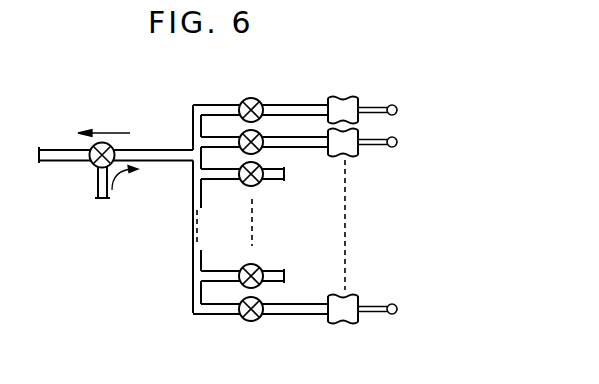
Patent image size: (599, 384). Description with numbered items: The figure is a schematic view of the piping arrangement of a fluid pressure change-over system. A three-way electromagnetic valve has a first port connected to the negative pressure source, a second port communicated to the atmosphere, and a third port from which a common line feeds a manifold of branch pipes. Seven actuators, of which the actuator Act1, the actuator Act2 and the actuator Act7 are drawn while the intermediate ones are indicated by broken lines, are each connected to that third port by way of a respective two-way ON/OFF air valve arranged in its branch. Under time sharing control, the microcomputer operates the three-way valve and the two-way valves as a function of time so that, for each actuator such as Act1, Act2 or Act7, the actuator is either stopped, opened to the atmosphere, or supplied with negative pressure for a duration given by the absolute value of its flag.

The actuator Act1 is at (388, 110).
The actuator Act2 is at (388, 143).
The actuator Act7 is at (388, 309).